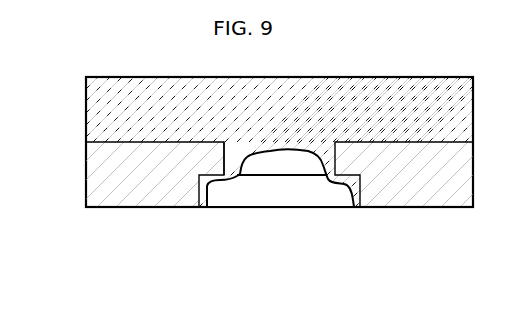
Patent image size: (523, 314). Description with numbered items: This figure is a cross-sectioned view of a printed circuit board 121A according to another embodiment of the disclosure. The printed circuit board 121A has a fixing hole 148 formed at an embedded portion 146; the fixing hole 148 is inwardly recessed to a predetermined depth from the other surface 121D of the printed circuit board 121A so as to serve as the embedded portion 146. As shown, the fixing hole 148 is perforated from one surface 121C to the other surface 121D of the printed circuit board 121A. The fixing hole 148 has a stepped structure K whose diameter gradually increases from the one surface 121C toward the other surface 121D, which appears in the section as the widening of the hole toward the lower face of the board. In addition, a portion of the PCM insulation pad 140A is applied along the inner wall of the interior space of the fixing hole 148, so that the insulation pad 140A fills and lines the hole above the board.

The PCM insulation pad 140A is at (86, 112).
The printed circuit board 121A is at (86, 175).
The other surface of the printed circuit board 121D is at (108, 207).
The one surface of the printed circuit board 121C is at (167, 143).
The stepped structure K is at (226, 172).
The fixing hole 148 is at (273, 166).
The embedded portion 146 is at (322, 264).